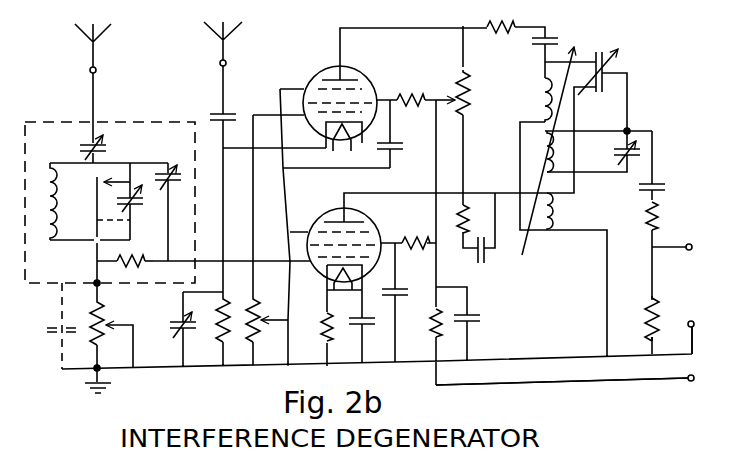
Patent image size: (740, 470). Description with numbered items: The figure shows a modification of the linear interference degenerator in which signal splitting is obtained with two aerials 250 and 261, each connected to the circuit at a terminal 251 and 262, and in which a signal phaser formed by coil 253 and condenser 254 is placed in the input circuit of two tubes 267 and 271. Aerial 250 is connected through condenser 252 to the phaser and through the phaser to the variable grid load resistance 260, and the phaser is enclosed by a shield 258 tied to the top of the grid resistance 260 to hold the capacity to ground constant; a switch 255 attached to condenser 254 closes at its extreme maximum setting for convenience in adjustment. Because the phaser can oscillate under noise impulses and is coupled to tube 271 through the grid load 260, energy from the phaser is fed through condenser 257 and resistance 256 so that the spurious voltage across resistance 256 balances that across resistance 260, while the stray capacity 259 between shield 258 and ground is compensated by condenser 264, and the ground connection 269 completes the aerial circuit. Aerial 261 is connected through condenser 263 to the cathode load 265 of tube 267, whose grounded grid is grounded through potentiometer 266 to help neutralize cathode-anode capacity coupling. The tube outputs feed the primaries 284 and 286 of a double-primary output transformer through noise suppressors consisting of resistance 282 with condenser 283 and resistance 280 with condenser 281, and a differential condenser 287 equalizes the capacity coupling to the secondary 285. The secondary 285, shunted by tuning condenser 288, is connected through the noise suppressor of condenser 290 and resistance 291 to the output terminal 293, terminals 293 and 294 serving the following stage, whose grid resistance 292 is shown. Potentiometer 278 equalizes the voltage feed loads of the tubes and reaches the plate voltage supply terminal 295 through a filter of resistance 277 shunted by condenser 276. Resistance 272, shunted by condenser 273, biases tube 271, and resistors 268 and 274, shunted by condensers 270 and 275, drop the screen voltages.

The aerial 250 is at (83, 38).
The terminal 251 is at (89, 72).
The condenser 252 is at (83, 148).
The coil 253 is at (55, 247).
The condenser 254 is at (132, 206).
The switch 255 is at (95, 181).
The resistance 256 is at (132, 257).
The condenser 257 is at (159, 167).
The shield 258 is at (145, 283).
The stray capacity 259 is at (50, 331).
The variable grid load resistance 260 is at (95, 333).
The aerial 261 is at (208, 33).
The terminal 262 is at (217, 65).
The condenser 263 is at (216, 112).
The condenser 264 is at (173, 330).
The cathode load 265 is at (218, 335).
The potentiometer 266 is at (259, 334).
The tube 267 is at (310, 70).
The resistor 268 is at (410, 108).
The ground connection 269 is at (87, 385).
The condenser 270 is at (403, 150).
The tube 271 is at (324, 208).
The resistance 272 is at (322, 328).
The condenser 273 is at (355, 328).
The resistor 274 is at (410, 230).
The condenser 275 is at (410, 270).
The condenser 276 is at (475, 310).
The resistance 277 is at (432, 320).
The potentiometer 278 is at (458, 92).
The resistance 280 is at (470, 200).
The condenser 281 is at (475, 250).
The resistance 282 is at (490, 30).
The condenser 283 is at (532, 42).
The primary coil 284 is at (542, 100).
The secondary coil 285 is at (532, 150).
The primary coil 286 is at (560, 210).
The differential condenser 287 is at (607, 57).
The tuning condenser 288 is at (625, 152).
The condenser 290 is at (642, 190).
The resistance 291 is at (643, 225).
The grid resistance 292 is at (647, 315).
The output terminal 293 is at (685, 252).
The terminal 294 is at (688, 325).
The plate voltage supply terminal 295 is at (690, 376).